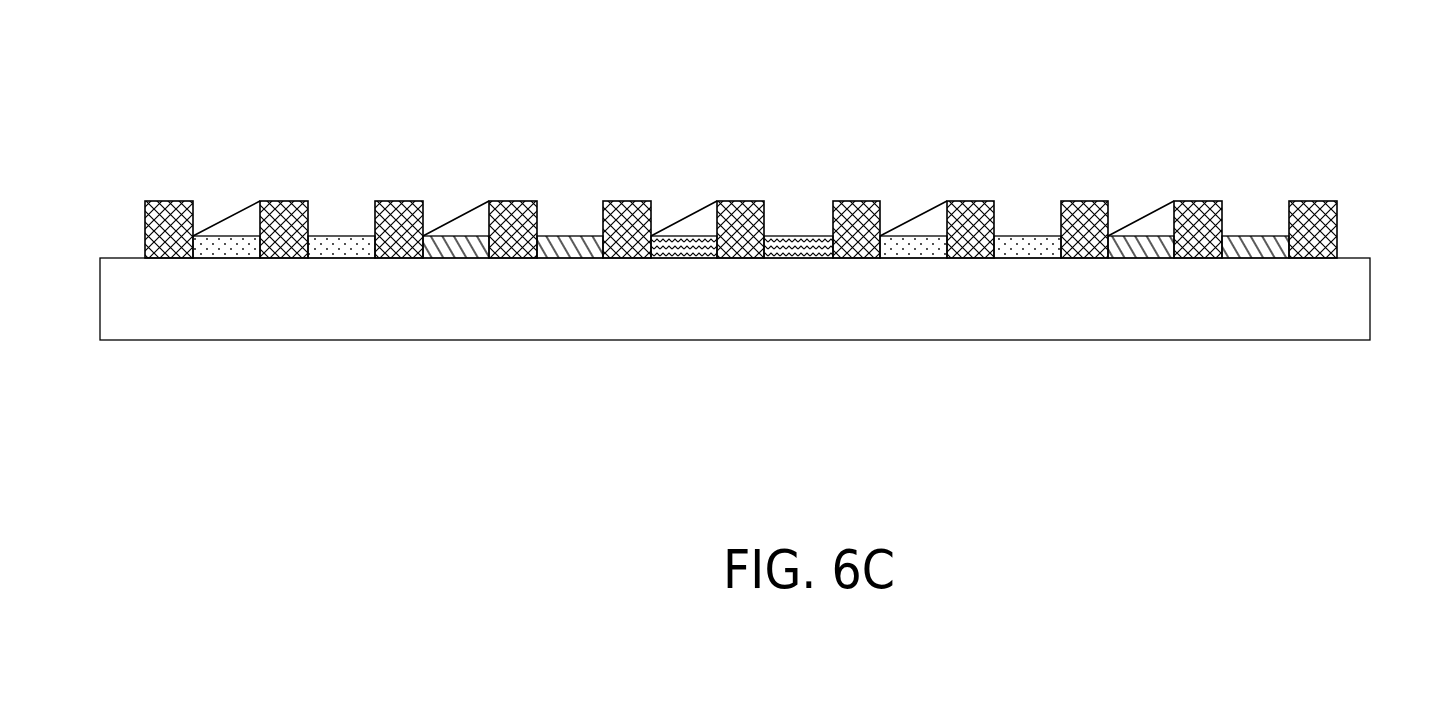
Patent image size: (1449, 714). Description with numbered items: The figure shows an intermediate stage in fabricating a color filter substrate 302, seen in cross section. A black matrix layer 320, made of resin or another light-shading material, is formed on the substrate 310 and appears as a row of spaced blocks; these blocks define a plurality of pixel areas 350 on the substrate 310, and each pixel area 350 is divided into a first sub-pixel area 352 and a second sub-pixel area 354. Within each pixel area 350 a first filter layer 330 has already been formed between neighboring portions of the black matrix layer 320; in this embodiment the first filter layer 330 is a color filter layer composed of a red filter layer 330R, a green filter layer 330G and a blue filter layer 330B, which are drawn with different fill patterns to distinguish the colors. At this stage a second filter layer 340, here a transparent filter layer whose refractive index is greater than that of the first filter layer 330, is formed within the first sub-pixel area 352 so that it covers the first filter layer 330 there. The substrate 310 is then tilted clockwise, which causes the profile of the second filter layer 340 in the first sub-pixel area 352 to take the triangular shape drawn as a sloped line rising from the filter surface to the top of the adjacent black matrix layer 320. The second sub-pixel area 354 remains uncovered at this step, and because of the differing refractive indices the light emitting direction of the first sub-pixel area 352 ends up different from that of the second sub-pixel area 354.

The color filter substrate 302 is at (1412, 438).
The substrate 310 is at (1340, 300).
The black matrix layer 320 is at (163, 203).
The first filter layer 330 is at (653, 418).
The red filter layer 330R is at (243, 257).
The green filter layer 330G is at (457, 257).
The blue filter layer 330B is at (673, 257).
The second filter layer 340 is at (472, 220).
The pixel area 350 is at (345, 107).
The first sub-pixel area 352 is at (237, 187).
The second sub-pixel area 354 is at (342, 185).